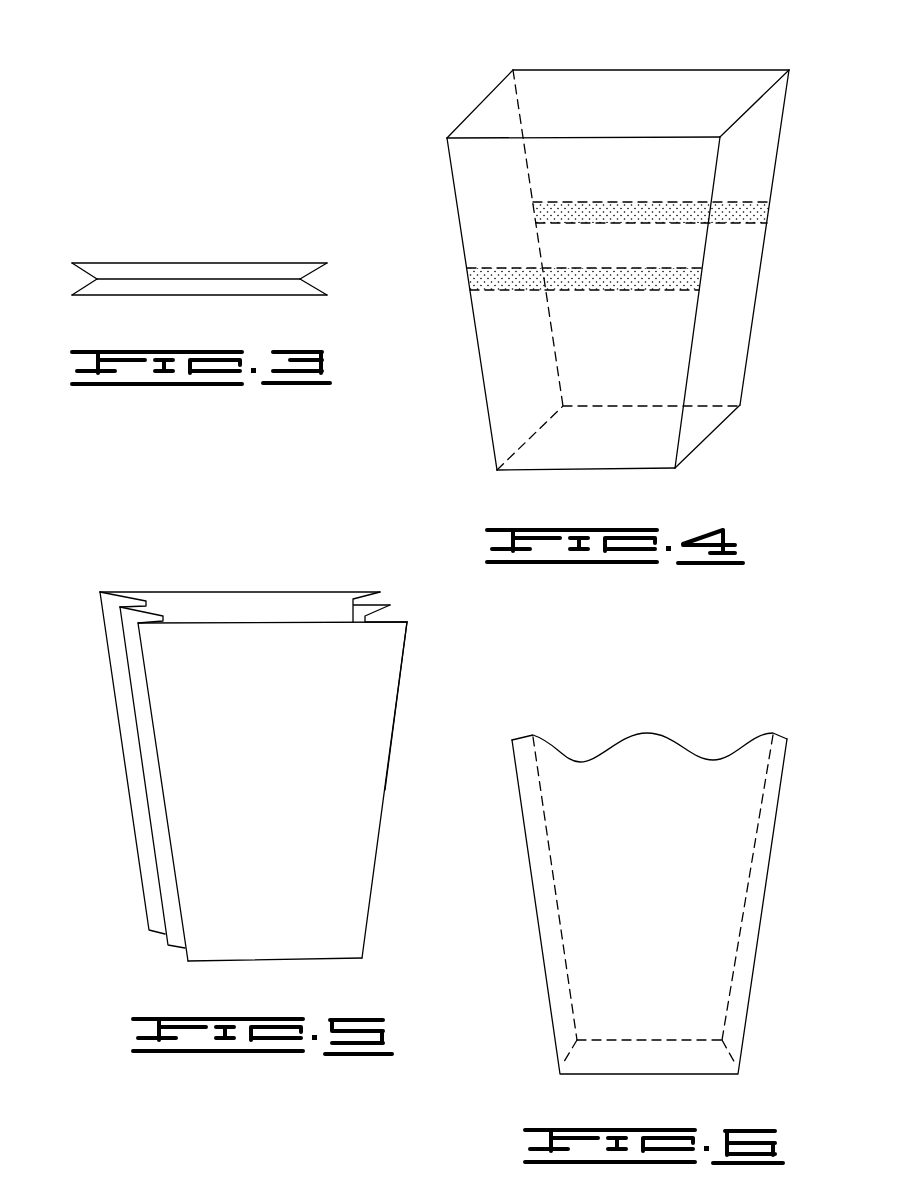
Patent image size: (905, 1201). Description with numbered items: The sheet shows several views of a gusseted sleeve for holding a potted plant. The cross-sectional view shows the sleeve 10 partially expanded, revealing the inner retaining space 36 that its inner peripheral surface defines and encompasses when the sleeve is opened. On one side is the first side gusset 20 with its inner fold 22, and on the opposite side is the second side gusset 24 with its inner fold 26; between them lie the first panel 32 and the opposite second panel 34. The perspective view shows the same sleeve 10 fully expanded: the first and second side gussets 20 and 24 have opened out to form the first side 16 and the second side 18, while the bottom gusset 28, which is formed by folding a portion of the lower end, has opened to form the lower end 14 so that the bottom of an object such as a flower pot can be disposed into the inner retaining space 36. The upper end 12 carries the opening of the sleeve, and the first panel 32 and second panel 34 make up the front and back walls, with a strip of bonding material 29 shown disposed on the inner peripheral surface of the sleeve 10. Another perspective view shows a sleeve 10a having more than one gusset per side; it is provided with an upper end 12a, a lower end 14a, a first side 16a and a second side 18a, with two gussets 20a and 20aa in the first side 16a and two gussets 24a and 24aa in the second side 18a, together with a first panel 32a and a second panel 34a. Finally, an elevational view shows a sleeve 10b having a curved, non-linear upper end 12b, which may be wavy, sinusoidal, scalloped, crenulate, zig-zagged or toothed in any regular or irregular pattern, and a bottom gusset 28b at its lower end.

In FIG. 3, the sleeve 10 is at (150, 223).
In FIG. 4, the sleeve 10 is at (792, 212).
In FIG. 5, the sleeve 10a is at (127, 872).
In FIG. 6, the sleeve 10b is at (523, 925).
In FIG. 4, the upper end 12 is at (590, 70).
In FIG. 5, the upper end 12a is at (207, 592).
In FIG. 6, the non-linear upper end 12b is at (650, 733).
In FIG. 4, the lower end 14 is at (628, 472).
In FIG. 5, the lower end 14a is at (330, 960).
In FIG. 4, the first side 16 is at (463, 120).
In FIG. 5, the first side 16a is at (125, 760).
In FIG. 4, the second side 18 is at (753, 167).
In FIG. 5, the second side 18a is at (380, 840).
In FIG. 3, the first side gusset 20 is at (72, 268).
In FIG. 4, the first side gusset 20 is at (500, 78).
In FIG. 5, the gusset 20a is at (110, 605).
In FIG. 5, the gusset 20aa is at (132, 645).
In FIG. 3, the inner fold 22 is at (98, 278).
In FIG. 3, the second side gusset 24 is at (320, 265).
In FIG. 4, the second side gusset 24 is at (730, 285).
In FIG. 5, the gusset 24a is at (378, 598).
In FIG. 5, the gusset 24aa is at (397, 612).
In FIG. 3, the inner fold 26 is at (297, 288).
In FIG. 4, the bottom gusset 28 is at (708, 437).
In FIG. 6, the bottom gusset 28b is at (740, 1043).
In FIG. 4, the bonding material 29 is at (498, 280).
In FIG. 3, the first panel 32 is at (200, 297).
In FIG. 4, the first panel 32 is at (512, 375).
In FIG. 5, the first panel 32a is at (372, 735).
In FIG. 3, the second panel 34 is at (205, 263).
In FIG. 4, the second panel 34 is at (748, 68).
In FIG. 5, the second panel 34a is at (285, 592).
In FIG. 3, the inner retaining space 36 is at (125, 288).
In FIG. 4, the inner retaining space 36 is at (632, 90).